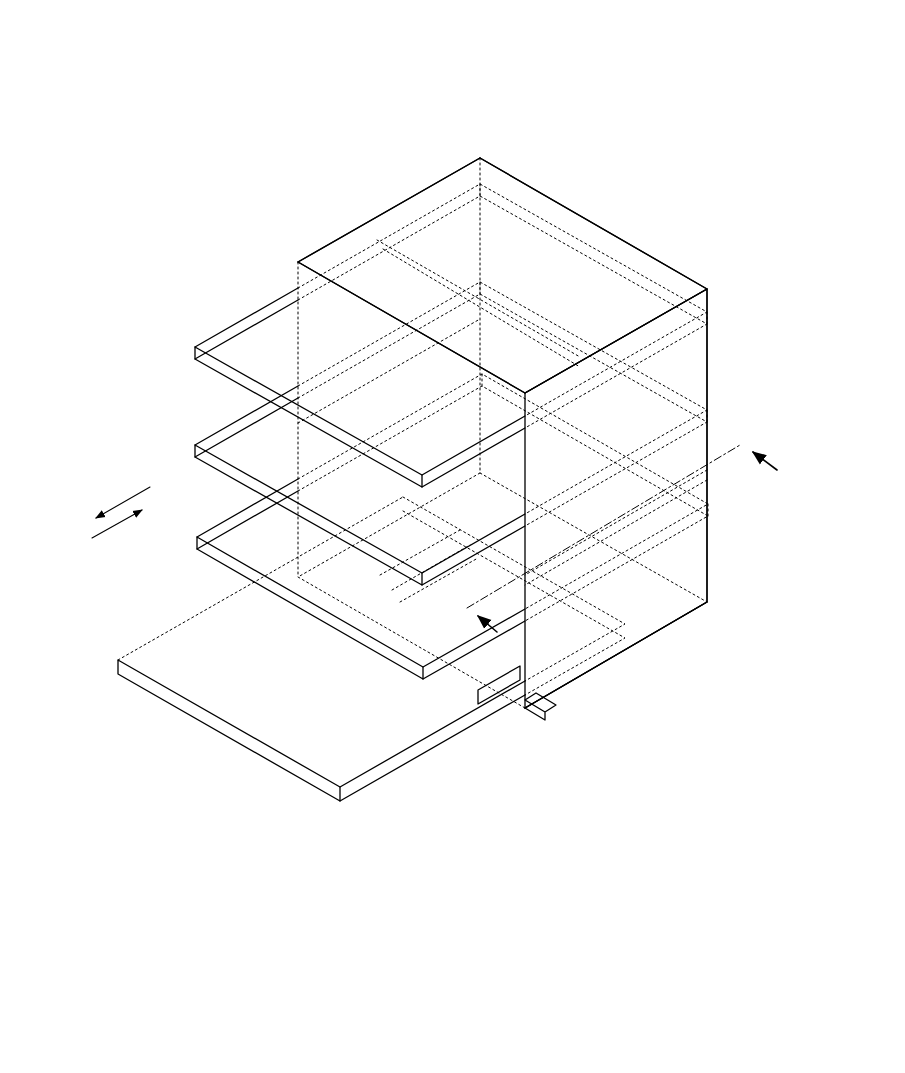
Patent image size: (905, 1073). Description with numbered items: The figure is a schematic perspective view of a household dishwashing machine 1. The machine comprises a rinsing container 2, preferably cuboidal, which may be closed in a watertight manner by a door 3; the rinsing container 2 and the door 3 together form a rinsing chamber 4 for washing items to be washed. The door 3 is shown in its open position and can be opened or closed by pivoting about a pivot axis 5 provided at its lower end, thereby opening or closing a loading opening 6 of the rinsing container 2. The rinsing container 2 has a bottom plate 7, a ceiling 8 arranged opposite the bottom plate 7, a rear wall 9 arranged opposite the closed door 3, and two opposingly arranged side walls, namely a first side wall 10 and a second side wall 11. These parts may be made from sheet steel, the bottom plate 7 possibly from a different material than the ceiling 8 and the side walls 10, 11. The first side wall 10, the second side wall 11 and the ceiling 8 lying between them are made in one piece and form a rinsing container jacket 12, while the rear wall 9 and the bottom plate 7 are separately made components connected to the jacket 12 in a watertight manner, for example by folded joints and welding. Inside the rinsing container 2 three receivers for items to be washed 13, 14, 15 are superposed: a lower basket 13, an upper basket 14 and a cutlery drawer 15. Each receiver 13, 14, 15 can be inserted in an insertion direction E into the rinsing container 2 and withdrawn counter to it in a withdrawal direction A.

The household dishwashing machine 1 is at (338, 160).
The rinsing container 2 is at (325, 242).
The door 3 is at (190, 638).
The rinsing chamber 4 is at (405, 400).
The pivot axis 5 is at (536, 698).
The loading opening 6 is at (504, 646).
The bottom plate 7 is at (642, 630).
The ceiling 8 is at (525, 215).
The rear wall 9 is at (693, 492).
The first side wall 10 is at (398, 230).
The second side wall 11 is at (673, 373).
The rinsing container jacket 12 is at (620, 62).
The receiver for items to be washed 13 is at (220, 542).
The receiver for items to be washed 14 is at (222, 448).
The receiver for items to be washed 15 is at (257, 333).